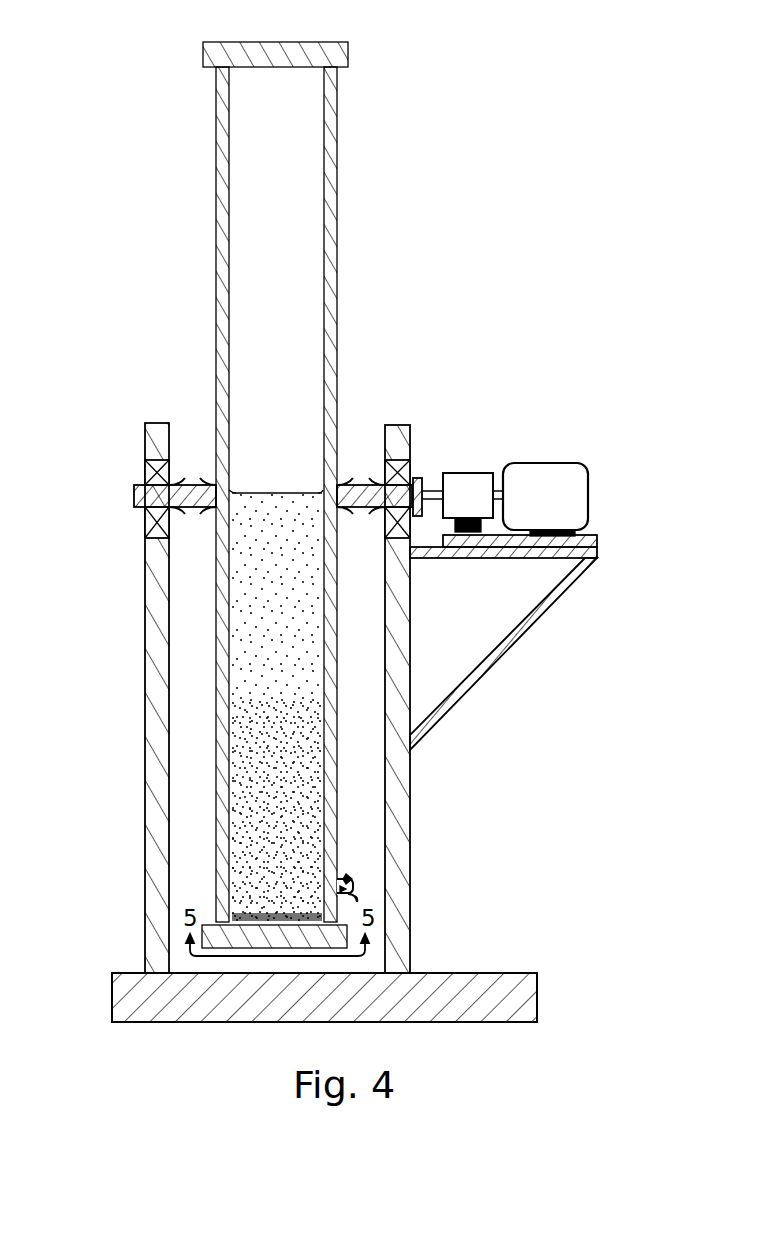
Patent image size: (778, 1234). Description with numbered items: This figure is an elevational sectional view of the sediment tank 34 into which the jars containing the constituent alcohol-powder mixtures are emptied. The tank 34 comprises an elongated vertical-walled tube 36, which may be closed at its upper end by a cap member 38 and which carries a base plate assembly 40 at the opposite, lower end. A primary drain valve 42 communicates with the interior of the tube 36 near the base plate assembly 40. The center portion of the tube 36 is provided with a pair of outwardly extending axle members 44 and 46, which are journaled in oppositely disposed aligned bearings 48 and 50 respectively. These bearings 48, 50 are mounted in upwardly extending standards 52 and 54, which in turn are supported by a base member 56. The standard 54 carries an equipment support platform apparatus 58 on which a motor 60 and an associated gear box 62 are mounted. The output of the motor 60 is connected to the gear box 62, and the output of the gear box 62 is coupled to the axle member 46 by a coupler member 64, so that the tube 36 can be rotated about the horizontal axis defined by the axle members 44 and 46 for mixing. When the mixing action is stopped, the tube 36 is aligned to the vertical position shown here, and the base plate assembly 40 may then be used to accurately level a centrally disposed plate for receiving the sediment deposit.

The sediment tank 34 is at (355, 293).
The tube 36 is at (220, 248).
The cap member 38 is at (280, 42).
The base plate assembly 40 is at (192, 866).
The primary drain valve 42 is at (353, 880).
The axle member 44 is at (190, 495).
The axle member 46 is at (362, 497).
The bearing 48 is at (148, 470).
The bearing 50 is at (412, 468).
The standard 52 is at (160, 625).
The standard 54 is at (405, 620).
The base member 56 is at (120, 992).
The equipment support platform apparatus 58 is at (590, 541).
The motor 60 is at (536, 470).
The gear box 62 is at (474, 488).
The coupler member 64 is at (437, 478).